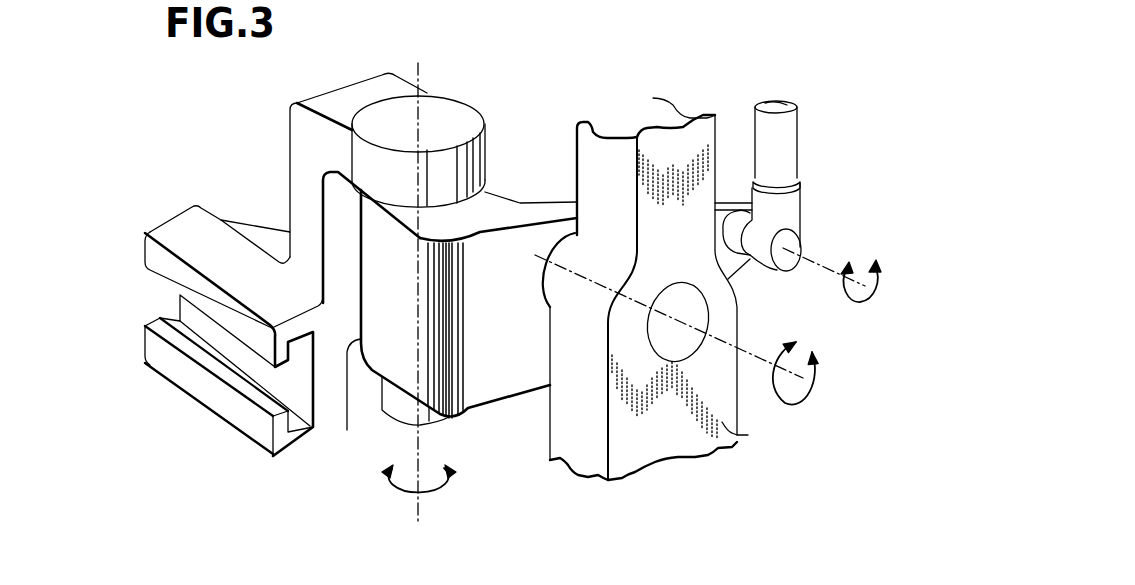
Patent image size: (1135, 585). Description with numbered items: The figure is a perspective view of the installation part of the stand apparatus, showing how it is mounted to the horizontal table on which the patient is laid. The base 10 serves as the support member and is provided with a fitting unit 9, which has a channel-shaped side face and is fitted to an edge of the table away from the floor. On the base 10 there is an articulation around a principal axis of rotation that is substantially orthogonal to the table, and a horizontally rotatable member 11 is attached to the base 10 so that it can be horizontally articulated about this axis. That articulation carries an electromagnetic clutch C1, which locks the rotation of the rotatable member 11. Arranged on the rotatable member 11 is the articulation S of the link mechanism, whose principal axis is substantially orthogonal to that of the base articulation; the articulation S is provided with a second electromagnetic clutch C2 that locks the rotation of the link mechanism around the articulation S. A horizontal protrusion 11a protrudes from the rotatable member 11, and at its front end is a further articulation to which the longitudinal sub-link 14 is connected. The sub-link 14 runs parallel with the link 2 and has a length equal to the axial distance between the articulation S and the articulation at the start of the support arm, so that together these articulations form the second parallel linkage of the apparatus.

The link 2 is at (748, 435).
The fitting unit 9 is at (245, 425).
The base 10 is at (300, 181).
The rotatable member 11 is at (498, 382).
The horizontal protrusion 11a is at (727, 200).
The longitudinal sub-link 14 is at (783, 128).
The electromagnetic clutch C1 is at (493, 150).
The electromagnetic clutch C2 is at (563, 247).
The articulation S is at (750, 342).